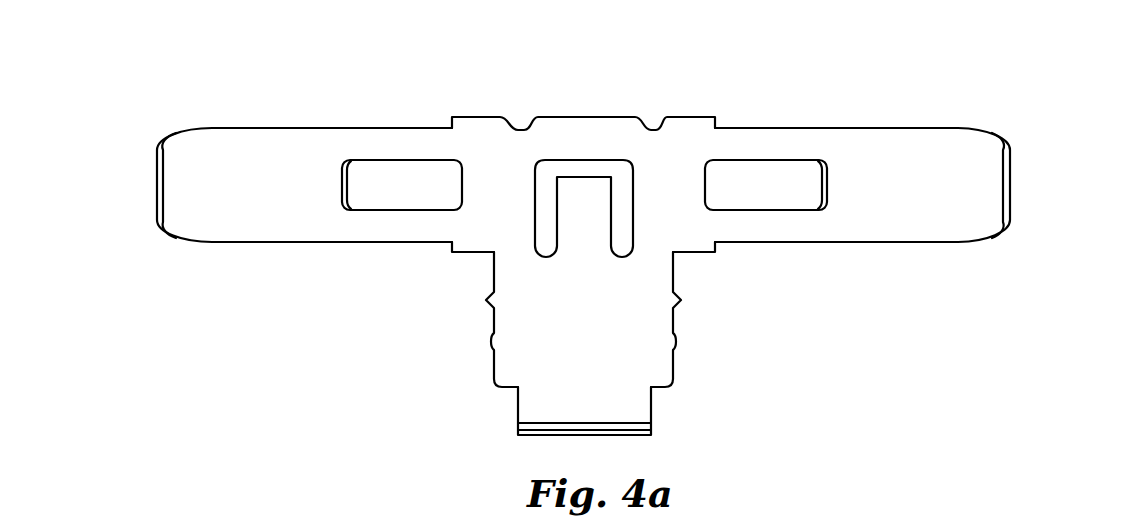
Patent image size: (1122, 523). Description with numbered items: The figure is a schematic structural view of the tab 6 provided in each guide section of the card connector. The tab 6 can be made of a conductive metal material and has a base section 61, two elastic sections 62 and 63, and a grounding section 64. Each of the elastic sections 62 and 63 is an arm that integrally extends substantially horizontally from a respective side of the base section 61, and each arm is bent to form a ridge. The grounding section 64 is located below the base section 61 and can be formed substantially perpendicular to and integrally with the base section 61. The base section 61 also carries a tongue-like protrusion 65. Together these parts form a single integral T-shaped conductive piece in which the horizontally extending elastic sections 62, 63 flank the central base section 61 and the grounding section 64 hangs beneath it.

The tab 6 is at (874, 90).
The base section 61 is at (648, 330).
The elastic section 62 is at (187, 180).
The elastic section 63 is at (970, 184).
The grounding section 64 is at (548, 437).
The tongue-like protrusion 65 is at (584, 198).